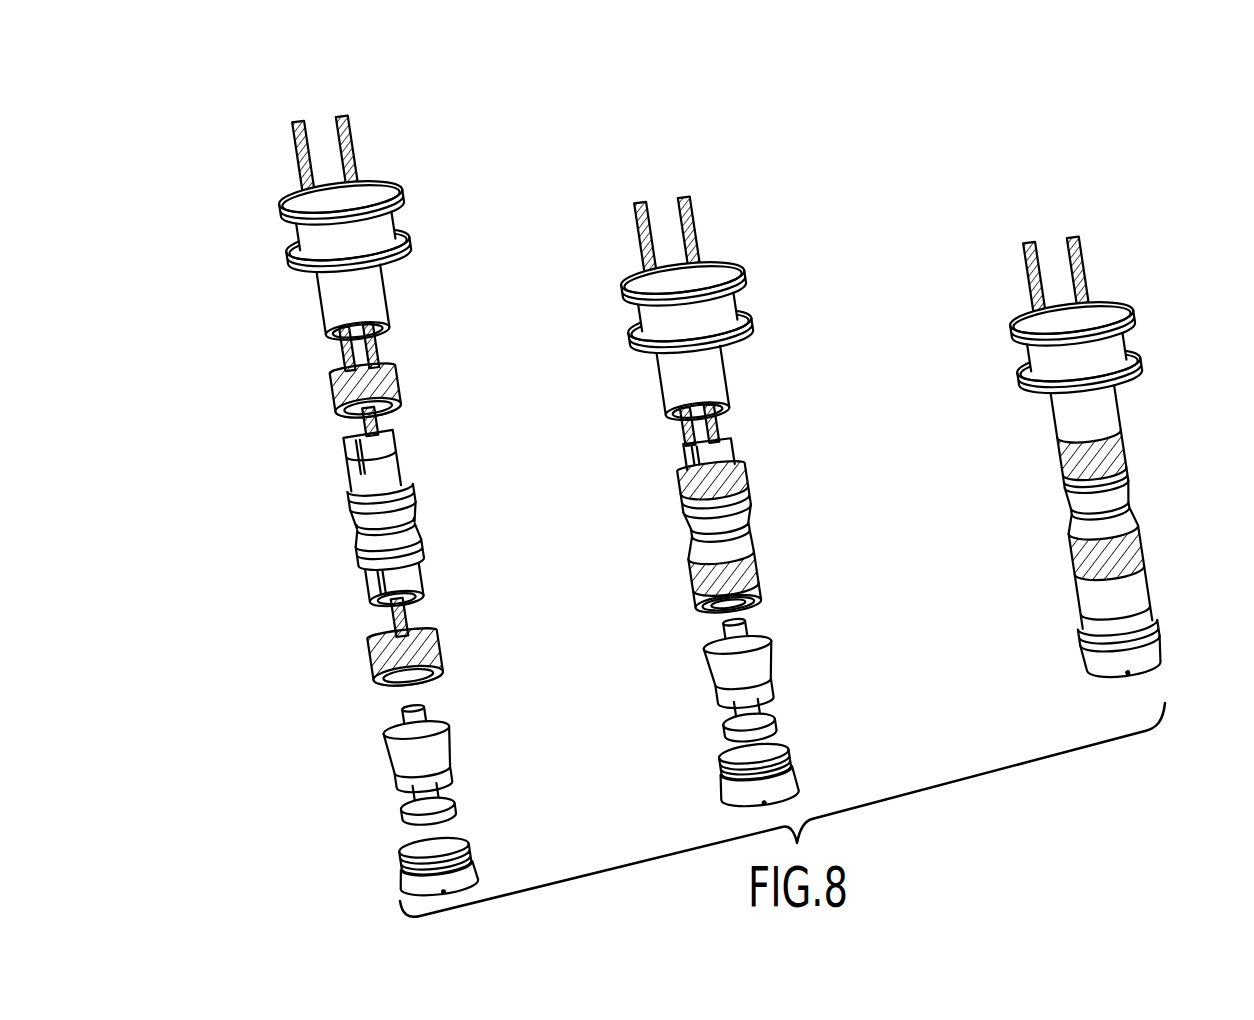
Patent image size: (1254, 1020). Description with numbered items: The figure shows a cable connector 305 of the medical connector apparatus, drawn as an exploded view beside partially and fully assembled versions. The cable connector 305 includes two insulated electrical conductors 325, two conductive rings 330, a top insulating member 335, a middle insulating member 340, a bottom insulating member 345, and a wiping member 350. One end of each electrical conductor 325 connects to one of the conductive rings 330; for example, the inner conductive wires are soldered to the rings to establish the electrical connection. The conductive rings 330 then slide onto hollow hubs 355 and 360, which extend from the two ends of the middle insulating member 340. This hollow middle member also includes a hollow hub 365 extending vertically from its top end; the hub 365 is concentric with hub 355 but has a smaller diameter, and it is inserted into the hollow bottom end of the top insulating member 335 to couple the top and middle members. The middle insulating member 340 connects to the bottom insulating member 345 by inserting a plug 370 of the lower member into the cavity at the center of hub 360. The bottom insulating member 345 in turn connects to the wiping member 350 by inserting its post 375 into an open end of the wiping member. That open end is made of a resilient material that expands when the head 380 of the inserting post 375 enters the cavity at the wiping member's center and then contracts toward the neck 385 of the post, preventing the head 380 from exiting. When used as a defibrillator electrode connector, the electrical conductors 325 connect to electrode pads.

The cable connector 305 is at (1160, 342).
The insulated electrical conductors 325 is at (304, 112).
The conductive rings 330 is at (360, 506).
The top insulating member 335 is at (432, 226).
The middle insulating member 340 is at (443, 503).
The bottom insulating member 345 is at (463, 750).
The wiping member 350 is at (482, 853).
The hollow hub 355 is at (420, 470).
The hollow hub 360 is at (434, 575).
The hollow hub 365 is at (413, 440).
The plug 370 is at (432, 710).
The inserting post 375 is at (453, 797).
The head 380 is at (390, 814).
The neck 385 is at (390, 800).